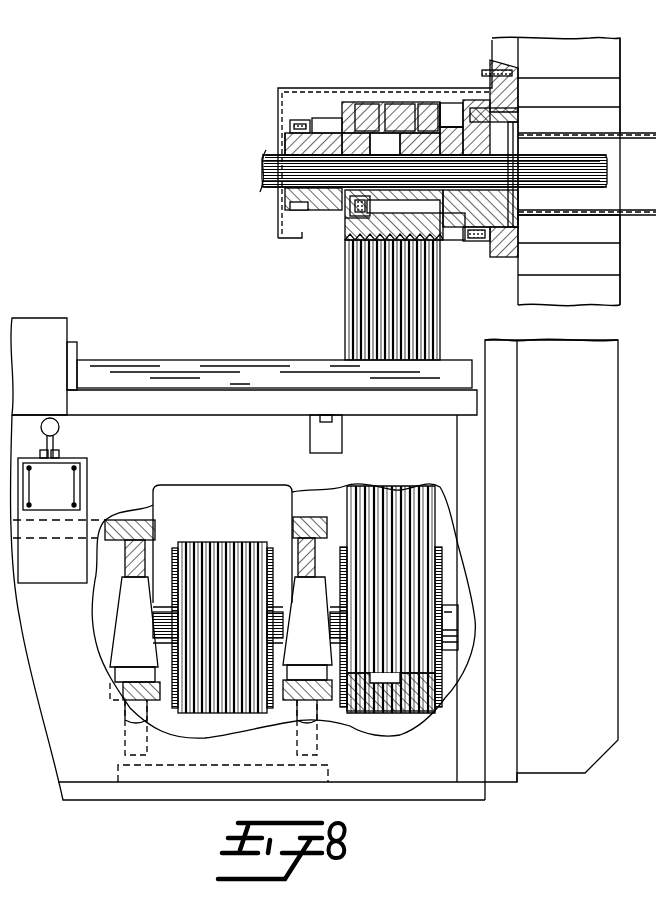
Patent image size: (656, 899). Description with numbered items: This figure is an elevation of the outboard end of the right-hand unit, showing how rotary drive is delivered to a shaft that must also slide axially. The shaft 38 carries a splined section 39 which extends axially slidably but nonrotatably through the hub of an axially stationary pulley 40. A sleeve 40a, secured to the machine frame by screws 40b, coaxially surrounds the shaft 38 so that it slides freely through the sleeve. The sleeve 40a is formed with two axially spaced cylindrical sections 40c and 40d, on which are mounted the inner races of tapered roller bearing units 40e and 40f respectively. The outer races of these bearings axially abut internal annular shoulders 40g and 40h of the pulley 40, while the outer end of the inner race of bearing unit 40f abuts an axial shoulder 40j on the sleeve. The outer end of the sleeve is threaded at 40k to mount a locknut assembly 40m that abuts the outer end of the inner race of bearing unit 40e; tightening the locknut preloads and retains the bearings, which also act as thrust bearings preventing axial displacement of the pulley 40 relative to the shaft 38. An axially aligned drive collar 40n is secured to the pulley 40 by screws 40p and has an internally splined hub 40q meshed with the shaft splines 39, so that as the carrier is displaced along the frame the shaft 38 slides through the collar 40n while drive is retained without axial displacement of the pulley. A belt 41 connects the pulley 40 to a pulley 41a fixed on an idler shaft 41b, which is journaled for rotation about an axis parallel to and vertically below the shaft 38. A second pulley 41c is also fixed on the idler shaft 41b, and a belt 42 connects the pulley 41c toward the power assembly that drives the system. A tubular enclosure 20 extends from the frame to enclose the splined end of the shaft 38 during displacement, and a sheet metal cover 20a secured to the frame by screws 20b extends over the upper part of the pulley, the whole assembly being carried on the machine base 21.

The tubular enclosure 20 is at (620, 133).
The sheet metal cover 20a is at (318, 88).
The screws 20b is at (492, 72).
The machine base 21 is at (492, 40).
The shaft 38 is at (262, 157).
The splined section 39 is at (276, 180).
The pulley 40 is at (403, 100).
The sleeve 40a is at (516, 128).
The screws 40b is at (484, 72).
The cylindrical section 40c is at (404, 110).
The cylindrical section 40d is at (520, 142).
The tapered roller bearing unit 40e is at (340, 132).
The tapered roller bearing unit 40f is at (430, 100).
The internal annular shoulder 40g is at (386, 110).
The internal annular shoulder 40h is at (442, 110).
The axial shoulder 40j is at (437, 228).
The threaded outer end 40k is at (338, 212).
The locknut assembly 40m is at (346, 226).
The drive collar 40n is at (284, 134).
The screws 40p is at (288, 133).
The internally splined hub 40q is at (285, 200).
The belt 41 is at (345, 300).
The pulley 41a is at (395, 700).
The idler shaft 41b is at (455, 618).
The pulley 41c is at (276, 560).
The belt 42 is at (232, 552).